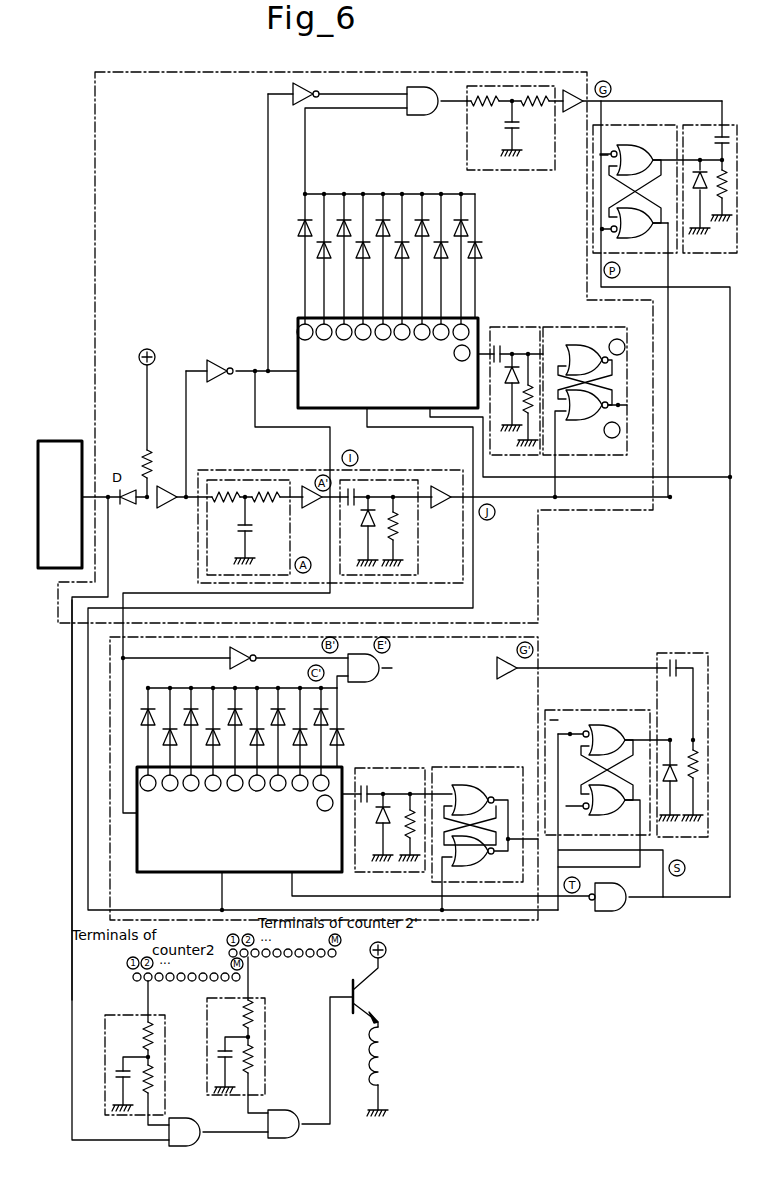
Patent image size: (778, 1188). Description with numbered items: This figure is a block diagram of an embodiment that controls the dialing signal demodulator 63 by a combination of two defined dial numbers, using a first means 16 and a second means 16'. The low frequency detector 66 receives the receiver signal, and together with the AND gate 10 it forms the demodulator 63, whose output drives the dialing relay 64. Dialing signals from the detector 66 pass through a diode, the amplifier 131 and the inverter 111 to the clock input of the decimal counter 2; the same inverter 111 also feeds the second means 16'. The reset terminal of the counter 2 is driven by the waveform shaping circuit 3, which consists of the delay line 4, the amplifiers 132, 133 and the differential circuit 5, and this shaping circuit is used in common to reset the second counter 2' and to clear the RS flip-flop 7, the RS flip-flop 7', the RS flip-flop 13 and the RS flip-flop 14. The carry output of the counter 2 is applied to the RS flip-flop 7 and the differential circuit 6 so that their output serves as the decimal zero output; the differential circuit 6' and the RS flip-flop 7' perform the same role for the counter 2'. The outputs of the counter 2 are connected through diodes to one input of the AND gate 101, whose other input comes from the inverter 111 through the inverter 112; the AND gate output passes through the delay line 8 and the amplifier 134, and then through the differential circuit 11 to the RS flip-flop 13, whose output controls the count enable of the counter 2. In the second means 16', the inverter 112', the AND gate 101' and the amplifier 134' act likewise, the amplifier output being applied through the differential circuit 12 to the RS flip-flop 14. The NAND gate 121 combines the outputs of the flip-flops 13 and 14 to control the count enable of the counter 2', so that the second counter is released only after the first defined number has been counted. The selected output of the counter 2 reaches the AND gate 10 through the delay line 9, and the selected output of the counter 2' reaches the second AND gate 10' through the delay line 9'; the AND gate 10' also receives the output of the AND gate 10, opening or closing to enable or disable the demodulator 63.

The first means 16 is at (355, 328).
The inverter 112 is at (303, 95).
The AND gate 101 is at (437, 115).
The amplifier 134 is at (642, 74).
The delay line 8 is at (540, 172).
The RS flip-flop 13 is at (593, 232).
The differential circuit 11 is at (692, 256).
The decimal counter 2 is at (367, 300).
The inverter 111 is at (210, 366).
The low frequency detector 66 is at (58, 441).
The amplifier 131 is at (169, 508).
The waveform shaping circuit 3 is at (216, 470).
The delay line 4 is at (245, 480).
The amplifier 132 is at (314, 509).
The differential circuit 5 is at (412, 480).
The amplifier 133 is at (443, 509).
The differential circuit 6 is at (515, 372).
The RS flip-flop 7 is at (585, 393).
The dialing signal demodulator 63 is at (72, 684).
The second means 16' is at (354, 769).
The inverter 112' is at (235, 663).
The AND gate 101' is at (364, 684).
The amplifier 134' is at (582, 688).
The differential circuit 12 is at (672, 652).
The RS flip-flop 14 is at (556, 710).
The differential circuit 6' is at (390, 803).
The RS flip-flop 7' is at (485, 820).
The second counter 2' is at (235, 796).
The NAND gate 121 is at (607, 912).
The delay line 9 is at (147, 1053).
The delay line 9' is at (251, 1035).
The AND gate 10 is at (218, 1142).
The second AND gate 10' is at (310, 1079).
The dialing relay 64 is at (400, 1053).